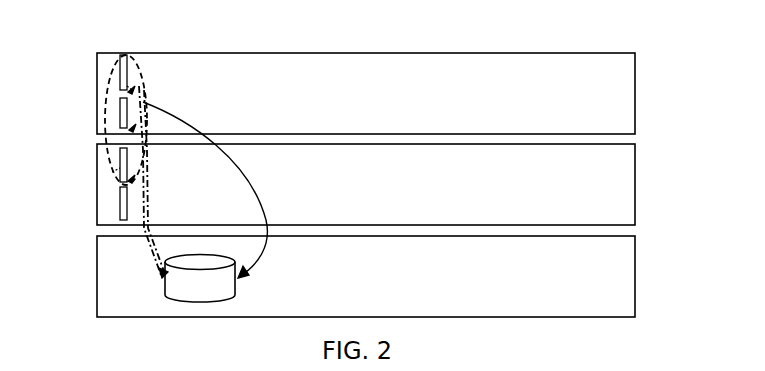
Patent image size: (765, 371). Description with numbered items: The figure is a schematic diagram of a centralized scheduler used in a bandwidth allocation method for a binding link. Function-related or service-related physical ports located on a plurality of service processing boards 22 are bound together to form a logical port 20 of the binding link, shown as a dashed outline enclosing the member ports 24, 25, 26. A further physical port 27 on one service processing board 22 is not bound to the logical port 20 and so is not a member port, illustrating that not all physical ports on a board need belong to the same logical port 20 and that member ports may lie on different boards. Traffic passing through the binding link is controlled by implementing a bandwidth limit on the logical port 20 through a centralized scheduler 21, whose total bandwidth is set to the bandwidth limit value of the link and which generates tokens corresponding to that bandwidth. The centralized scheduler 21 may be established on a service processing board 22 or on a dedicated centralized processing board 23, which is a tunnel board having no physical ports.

The logical port 20 is at (104, 141).
The centralized scheduler 21 is at (178, 292).
The service processing board 22 is at (623, 107).
The centralized processing board 23 is at (623, 287).
The member port 24 is at (128, 54).
The member port 25 is at (119, 108).
The member port 26 is at (120, 168).
The physical port 27 is at (120, 212).